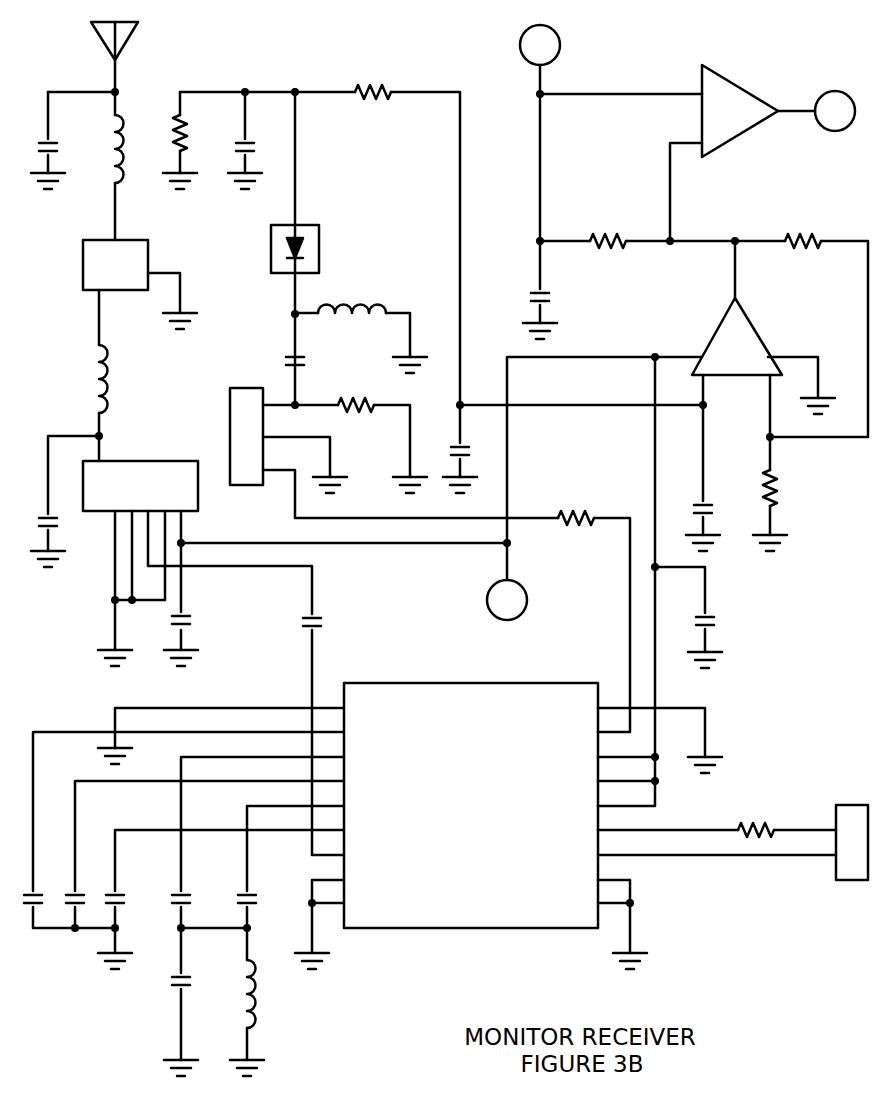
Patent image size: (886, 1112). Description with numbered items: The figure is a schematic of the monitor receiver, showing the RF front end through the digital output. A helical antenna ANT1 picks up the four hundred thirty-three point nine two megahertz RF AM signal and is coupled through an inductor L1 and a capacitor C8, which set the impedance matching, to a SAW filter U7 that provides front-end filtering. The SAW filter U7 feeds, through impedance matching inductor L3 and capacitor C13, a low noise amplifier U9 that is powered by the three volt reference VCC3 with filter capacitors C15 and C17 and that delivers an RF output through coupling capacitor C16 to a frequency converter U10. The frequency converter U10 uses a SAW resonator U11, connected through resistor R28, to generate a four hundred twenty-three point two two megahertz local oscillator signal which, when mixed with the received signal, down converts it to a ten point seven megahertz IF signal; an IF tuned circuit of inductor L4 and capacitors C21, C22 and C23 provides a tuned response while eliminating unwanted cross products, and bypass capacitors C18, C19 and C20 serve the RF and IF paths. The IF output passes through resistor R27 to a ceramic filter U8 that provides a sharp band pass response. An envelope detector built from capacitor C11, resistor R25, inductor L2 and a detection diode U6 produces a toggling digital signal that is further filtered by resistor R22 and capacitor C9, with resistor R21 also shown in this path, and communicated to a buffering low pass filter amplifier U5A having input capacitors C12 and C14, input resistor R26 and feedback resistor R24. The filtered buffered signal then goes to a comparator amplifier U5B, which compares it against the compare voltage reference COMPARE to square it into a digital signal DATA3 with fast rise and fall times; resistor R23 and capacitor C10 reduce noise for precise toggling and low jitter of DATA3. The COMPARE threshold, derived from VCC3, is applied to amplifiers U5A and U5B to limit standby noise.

The antenna ANT1 is at (148, 41).
The capacitor C8 is at (37, 132).
The inductor L1 is at (103, 149).
The resistor R22 is at (163, 132).
The capacitor C9 is at (229, 132).
The resistor R21 is at (374, 80).
The SAW filter U7 is at (96, 265).
The inductor L3 is at (83, 378).
The low noise amplifier U9 is at (140, 472).
The capacitor C13 is at (33, 507).
The filter capacitor C15 is at (199, 608).
The coupling capacitor C16 is at (296, 609).
The detection diode U6 is at (304, 235).
The inductor L2 is at (352, 297).
The capacitor C11 is at (280, 347).
The resistor R25 is at (355, 392).
The ceramic filter U8 is at (231, 434).
The input capacitor C12 is at (478, 438).
The resistor R27 is at (580, 505).
The three volt voltage reference VCC3 is at (482, 600).
The capacitor C10 is at (519, 284).
The compare voltage reference COMPARE is at (552, 35).
The comparator amplifier U5B is at (728, 111).
The square wave digital signal DATA3 is at (845, 97).
The resistor R23 is at (608, 258).
The feed back resistor R24 is at (804, 229).
The buffering low pass filter amplifier U5A is at (737, 350).
The input capacitor C14 is at (687, 495).
The input resistor R26 is at (749, 482).
The filter capacitor C17 is at (689, 608).
The frequency converter U10 is at (471, 792).
The bypass capacitor C18 is at (48, 888).
The bypass capacitor C19 is at (89, 888).
The bypass capacitor C20 is at (130, 888).
The capacitor C21 is at (196, 888).
The capacitor C22 is at (262, 888).
The capacitor C23 is at (166, 967).
The inductor L4 is at (235, 994).
The resistor R28 is at (756, 817).
The SAW resonator U11 is at (849, 829).